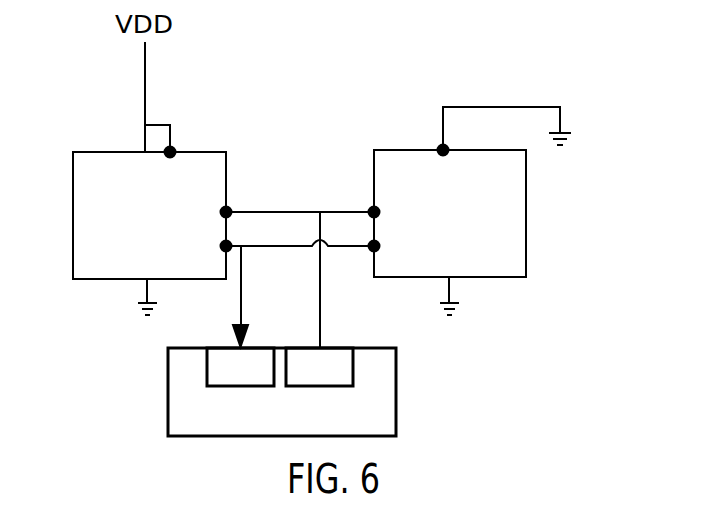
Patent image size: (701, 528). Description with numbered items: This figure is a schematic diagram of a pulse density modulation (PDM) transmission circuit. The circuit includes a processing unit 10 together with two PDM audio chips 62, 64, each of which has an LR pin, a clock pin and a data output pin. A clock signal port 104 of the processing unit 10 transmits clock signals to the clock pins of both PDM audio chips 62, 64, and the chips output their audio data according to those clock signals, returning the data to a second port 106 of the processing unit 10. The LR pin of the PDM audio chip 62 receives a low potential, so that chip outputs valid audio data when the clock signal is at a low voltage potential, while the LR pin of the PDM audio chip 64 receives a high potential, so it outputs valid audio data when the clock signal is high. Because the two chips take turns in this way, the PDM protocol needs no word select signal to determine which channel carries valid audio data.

The processing unit 10 is at (166, 370).
The PDM audio chip 62 is at (511, 278).
The PDM audio chip 64 is at (118, 151).
The clock signal port 104 is at (319, 367).
The second storage unit 106 is at (240, 367).